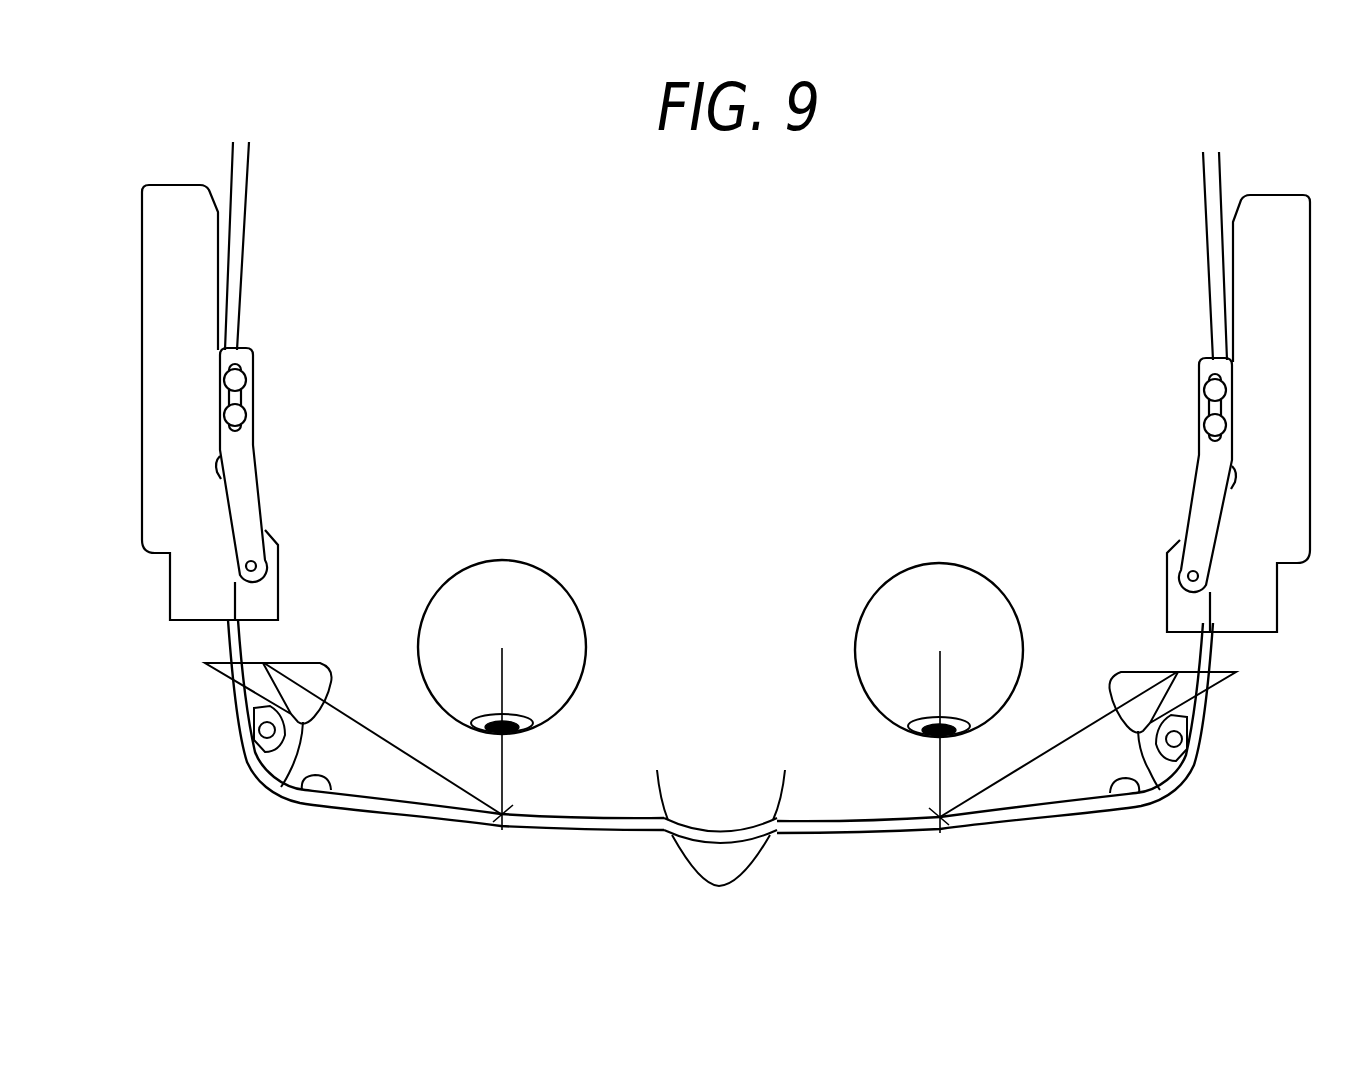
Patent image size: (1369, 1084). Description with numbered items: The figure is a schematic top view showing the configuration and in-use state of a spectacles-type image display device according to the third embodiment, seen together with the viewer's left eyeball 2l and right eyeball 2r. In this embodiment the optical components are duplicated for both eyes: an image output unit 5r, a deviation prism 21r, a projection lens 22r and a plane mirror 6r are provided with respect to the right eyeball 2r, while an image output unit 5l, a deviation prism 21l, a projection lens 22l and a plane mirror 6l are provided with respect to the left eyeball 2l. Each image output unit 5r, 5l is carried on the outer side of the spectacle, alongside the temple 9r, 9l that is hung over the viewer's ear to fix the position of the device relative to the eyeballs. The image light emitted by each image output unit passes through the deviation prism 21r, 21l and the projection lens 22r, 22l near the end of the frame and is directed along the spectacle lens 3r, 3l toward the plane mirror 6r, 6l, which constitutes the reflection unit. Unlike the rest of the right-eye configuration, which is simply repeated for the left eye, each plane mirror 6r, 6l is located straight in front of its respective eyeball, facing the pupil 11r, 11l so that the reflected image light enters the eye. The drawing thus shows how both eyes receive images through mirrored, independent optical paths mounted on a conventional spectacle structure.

The right eyeball 2r is at (503, 590).
The left eyeball 2l is at (912, 597).
The spectacle lens 3r is at (615, 832).
The spectacle lens 3l is at (856, 832).
The image output unit 5r is at (205, 448).
The image output unit 5l is at (1240, 315).
The plane mirror 6r is at (497, 828).
The plane mirror 6l is at (940, 832).
The temple 9r is at (230, 293).
The temple 9l is at (1217, 222).
The pupil 11r is at (515, 718).
The pupil 11l is at (925, 720).
The deviation prism 21r is at (220, 673).
The deviation prism 21l is at (1230, 683).
The projection lens 22r is at (265, 788).
The projection lens 22l is at (1157, 777).